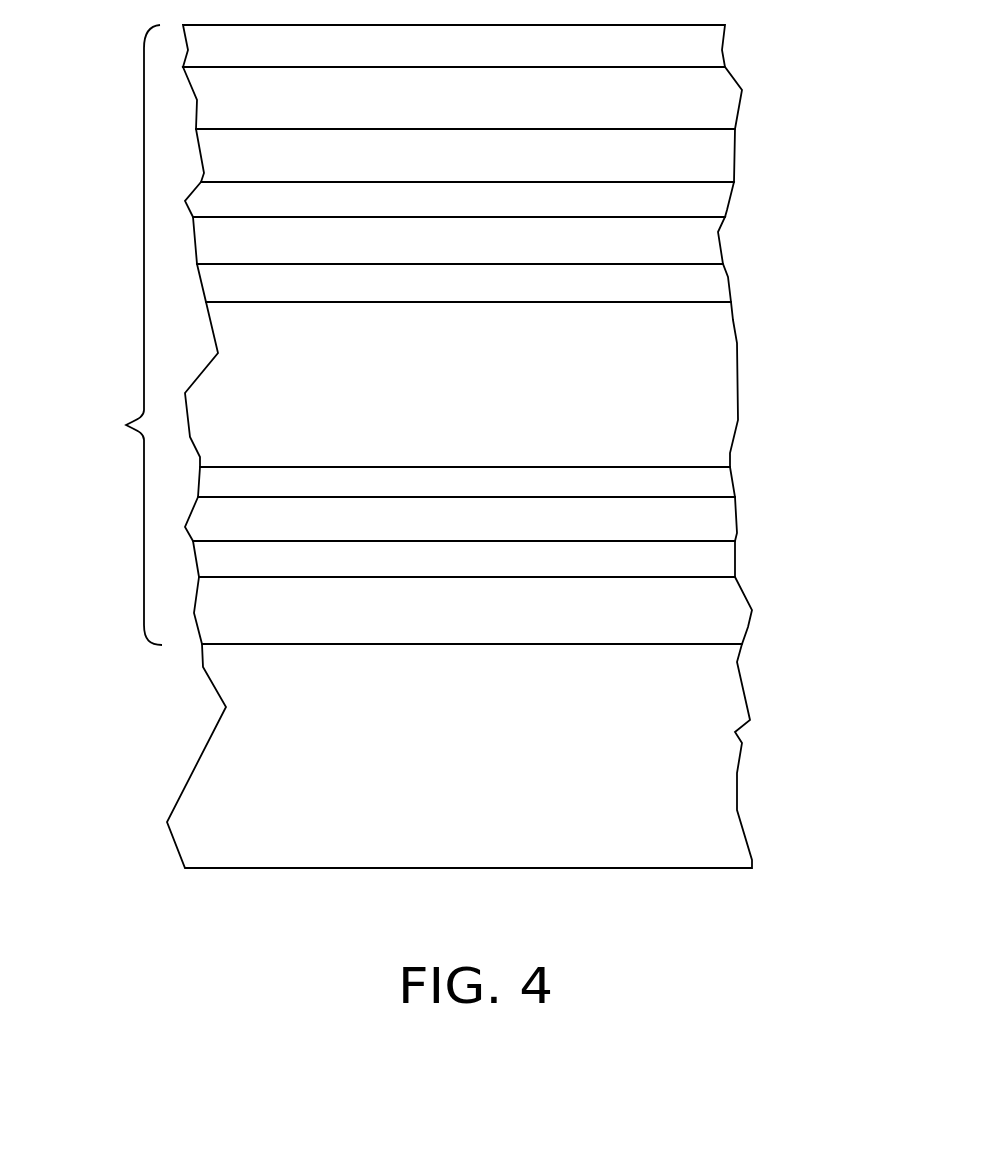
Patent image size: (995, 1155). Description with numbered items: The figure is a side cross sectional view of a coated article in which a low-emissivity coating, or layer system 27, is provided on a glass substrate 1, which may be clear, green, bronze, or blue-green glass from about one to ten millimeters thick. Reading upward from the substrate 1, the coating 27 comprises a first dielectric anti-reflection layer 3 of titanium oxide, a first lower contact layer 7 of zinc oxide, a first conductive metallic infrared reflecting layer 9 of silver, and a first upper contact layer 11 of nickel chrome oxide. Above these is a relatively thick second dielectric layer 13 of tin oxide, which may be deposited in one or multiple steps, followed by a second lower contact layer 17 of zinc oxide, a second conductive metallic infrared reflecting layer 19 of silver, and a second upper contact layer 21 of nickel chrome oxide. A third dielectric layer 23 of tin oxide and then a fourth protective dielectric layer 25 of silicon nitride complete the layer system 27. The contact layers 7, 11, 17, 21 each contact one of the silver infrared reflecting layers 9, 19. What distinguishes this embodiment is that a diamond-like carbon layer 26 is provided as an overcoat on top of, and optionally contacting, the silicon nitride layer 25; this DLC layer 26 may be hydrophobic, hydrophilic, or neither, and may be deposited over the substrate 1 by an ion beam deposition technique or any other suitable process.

The substrate 1 is at (703, 780).
The first dielectric anti-reflection layer 3 is at (730, 617).
The first lower contact layer 7 is at (703, 558).
The first conductive metallic infrared (IR) reflecting layer 9 is at (713, 520).
The first upper contact layer 11 is at (708, 485).
The second dielectric layer 13 is at (703, 382).
The second lower contact layer 17 is at (713, 283).
The second conductive metallic IR reflecting layer 19 is at (722, 243).
The second upper contact layer 21 is at (722, 203).
The third dielectric layer 23 is at (727, 155).
The fourth protective dielectric layer 25 is at (707, 103).
The diamond-like carbon (DLC) layer 26 is at (705, 42).
The coating (or layer system) 27 is at (125, 430).